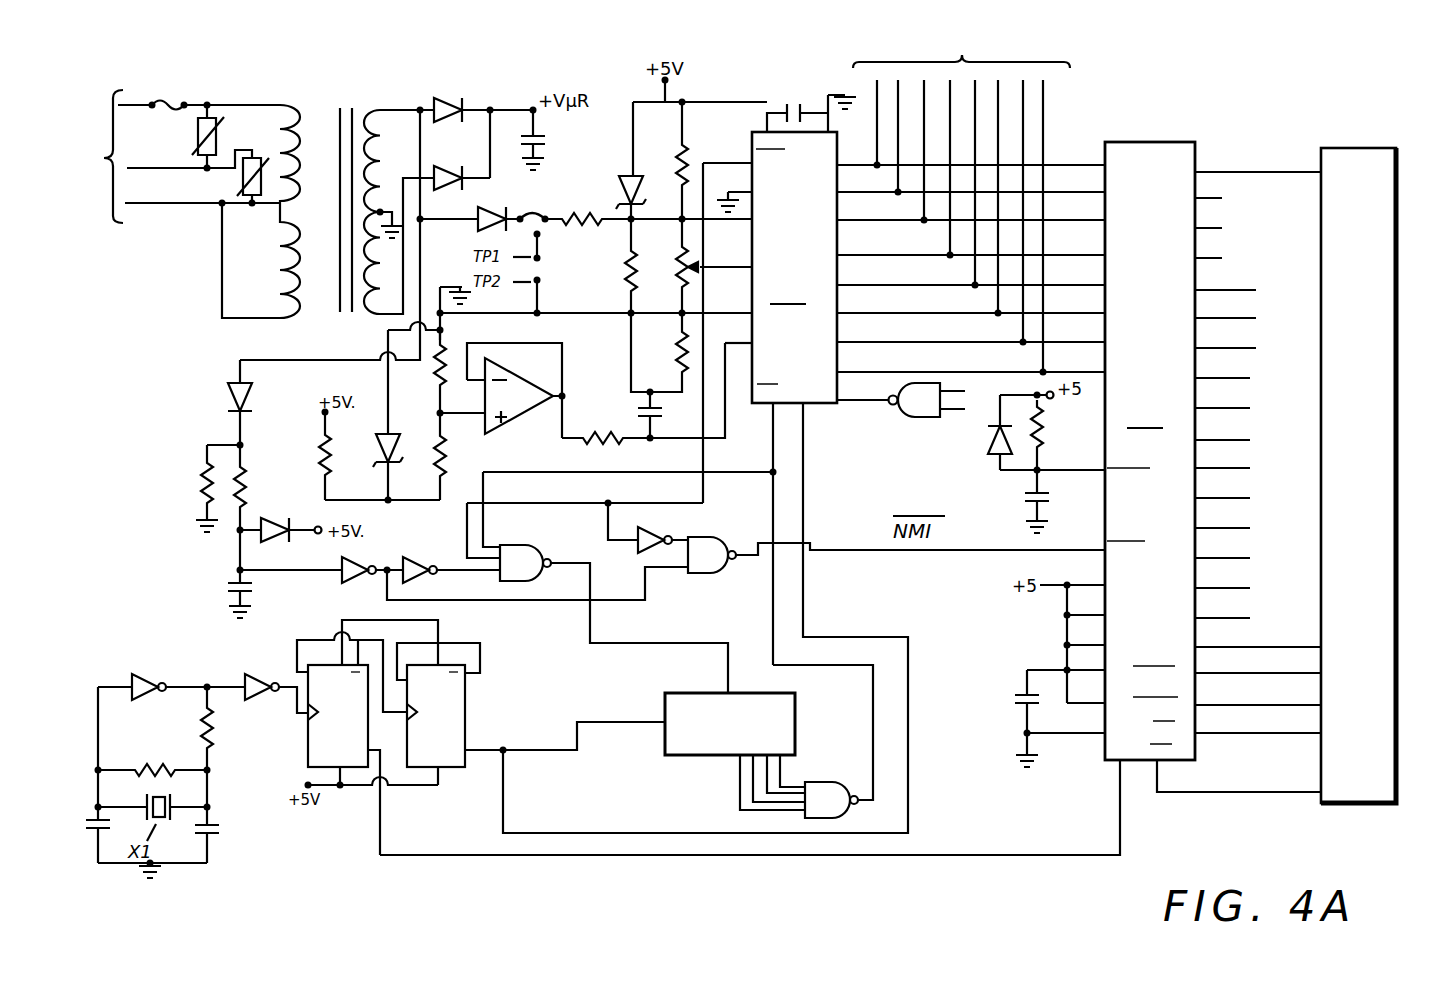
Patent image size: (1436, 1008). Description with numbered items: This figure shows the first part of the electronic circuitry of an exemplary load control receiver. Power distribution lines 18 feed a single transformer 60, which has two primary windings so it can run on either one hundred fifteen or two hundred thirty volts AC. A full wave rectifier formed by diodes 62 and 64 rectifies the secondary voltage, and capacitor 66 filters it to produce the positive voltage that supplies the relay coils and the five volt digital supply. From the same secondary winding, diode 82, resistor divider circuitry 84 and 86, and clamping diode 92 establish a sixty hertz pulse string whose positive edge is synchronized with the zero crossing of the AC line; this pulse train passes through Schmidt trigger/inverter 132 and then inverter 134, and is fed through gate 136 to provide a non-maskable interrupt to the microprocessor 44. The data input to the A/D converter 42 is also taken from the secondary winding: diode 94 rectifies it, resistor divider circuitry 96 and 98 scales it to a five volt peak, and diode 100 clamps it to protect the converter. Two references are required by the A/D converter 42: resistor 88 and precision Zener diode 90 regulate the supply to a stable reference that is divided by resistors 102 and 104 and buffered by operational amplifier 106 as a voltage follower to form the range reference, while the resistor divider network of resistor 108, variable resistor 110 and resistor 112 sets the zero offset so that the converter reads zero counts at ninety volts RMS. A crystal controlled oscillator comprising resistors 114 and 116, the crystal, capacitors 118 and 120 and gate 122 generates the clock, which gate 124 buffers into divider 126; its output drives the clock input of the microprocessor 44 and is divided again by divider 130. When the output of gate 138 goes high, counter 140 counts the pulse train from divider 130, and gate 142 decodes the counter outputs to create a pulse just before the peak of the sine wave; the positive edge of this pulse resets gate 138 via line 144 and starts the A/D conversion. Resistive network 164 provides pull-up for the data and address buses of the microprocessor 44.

The power distribution lines 18 is at (93, 156).
The transformer 60 is at (352, 98).
The diode 62 is at (462, 94).
The diode 64 is at (452, 166).
The capacitor 66 is at (541, 138).
The diode 94 is at (494, 208).
The resistor 96 is at (582, 207).
The diode 100 is at (614, 186).
The resistor 108 is at (676, 152).
The variable resistor 110 is at (673, 273).
The resistor 98 is at (621, 289).
The resistor 112 is at (659, 352).
The resistor 102 is at (419, 369).
The precision Zener diode 90 is at (397, 436).
The resistor 104 is at (417, 465).
The operational amplifier 106 is at (527, 409).
The A/D converter 42 is at (794, 267).
The microprocessor 44 is at (1150, 451).
The resistive network 164 is at (1378, 495).
The diode 82 is at (254, 392).
The resistor 84 is at (203, 483).
The resistor 86 is at (250, 490).
The resistor 88 is at (323, 451).
The clamping diode 92 is at (272, 525).
The Schmidt trigger/inverter 132 is at (357, 582).
The Schmidt trigger/inverter 134 is at (419, 577).
The gate 138 is at (528, 550).
The gate 136 is at (716, 541).
The line 144 is at (590, 472).
The counter 140 is at (748, 742).
The gate 142 is at (840, 775).
The gate 122 is at (157, 657).
The gate 124 is at (271, 661).
The resistor 116 is at (213, 741).
The resistor 114 is at (160, 760).
The capacitor 118 is at (219, 824).
The capacitor 120 is at (87, 815).
The divider 126 is at (327, 727).
The divider 130 is at (467, 702).